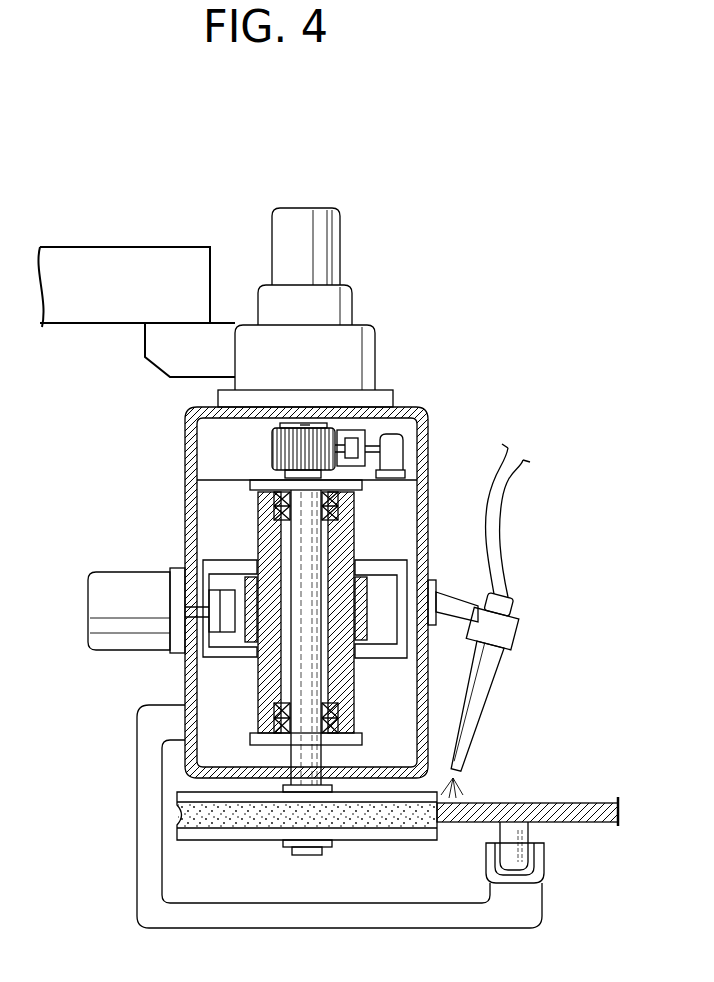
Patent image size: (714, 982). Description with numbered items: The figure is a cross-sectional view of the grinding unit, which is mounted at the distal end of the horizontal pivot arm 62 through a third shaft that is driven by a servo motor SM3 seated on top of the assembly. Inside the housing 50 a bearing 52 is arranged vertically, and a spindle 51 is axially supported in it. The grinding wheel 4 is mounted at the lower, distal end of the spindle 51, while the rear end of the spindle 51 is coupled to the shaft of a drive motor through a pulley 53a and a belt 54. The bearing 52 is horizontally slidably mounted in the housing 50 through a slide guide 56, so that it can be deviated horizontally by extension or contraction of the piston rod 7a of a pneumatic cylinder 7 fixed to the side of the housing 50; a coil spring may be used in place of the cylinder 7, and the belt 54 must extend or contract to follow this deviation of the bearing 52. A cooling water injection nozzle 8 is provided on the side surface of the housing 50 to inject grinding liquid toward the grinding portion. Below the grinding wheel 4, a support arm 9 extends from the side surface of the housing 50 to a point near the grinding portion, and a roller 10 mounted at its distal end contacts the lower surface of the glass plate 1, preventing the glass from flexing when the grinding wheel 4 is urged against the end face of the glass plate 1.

The glass plate 1 is at (553, 802).
The grinding wheel 4 is at (405, 830).
The pneumatic cylinder 7 is at (100, 636).
The piston rod 7a is at (197, 686).
The cooling water injection nozzle 8 is at (478, 685).
The support arm 9 is at (216, 915).
The roller 10 is at (530, 832).
The housing 50 is at (428, 437).
The spindle 51 is at (305, 673).
The bearing 52 is at (352, 525).
The pulley 53a is at (313, 427).
The belt 54 is at (272, 452).
The slide guide 56 is at (385, 573).
The horizontal pivot arm 62 is at (146, 262).
The servo motor SM3 is at (341, 216).